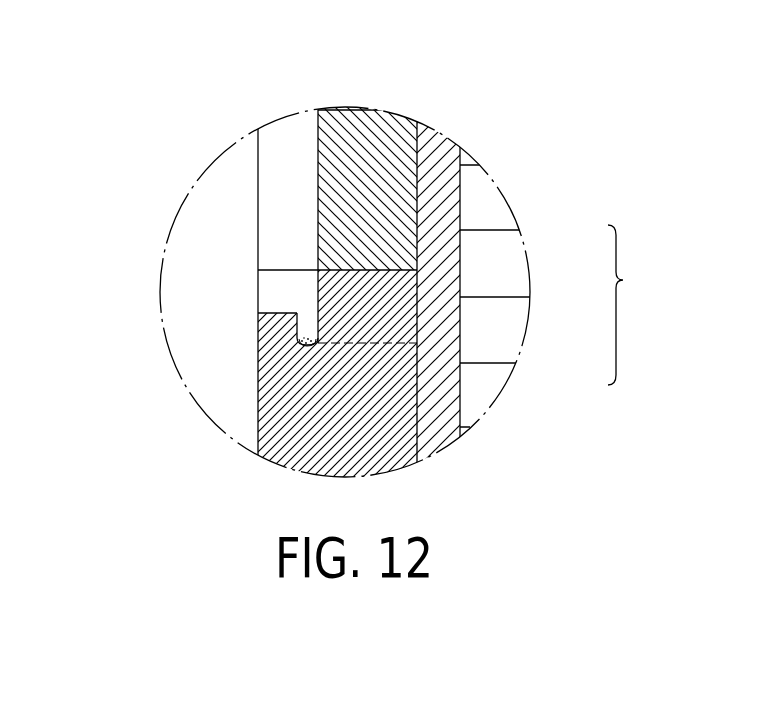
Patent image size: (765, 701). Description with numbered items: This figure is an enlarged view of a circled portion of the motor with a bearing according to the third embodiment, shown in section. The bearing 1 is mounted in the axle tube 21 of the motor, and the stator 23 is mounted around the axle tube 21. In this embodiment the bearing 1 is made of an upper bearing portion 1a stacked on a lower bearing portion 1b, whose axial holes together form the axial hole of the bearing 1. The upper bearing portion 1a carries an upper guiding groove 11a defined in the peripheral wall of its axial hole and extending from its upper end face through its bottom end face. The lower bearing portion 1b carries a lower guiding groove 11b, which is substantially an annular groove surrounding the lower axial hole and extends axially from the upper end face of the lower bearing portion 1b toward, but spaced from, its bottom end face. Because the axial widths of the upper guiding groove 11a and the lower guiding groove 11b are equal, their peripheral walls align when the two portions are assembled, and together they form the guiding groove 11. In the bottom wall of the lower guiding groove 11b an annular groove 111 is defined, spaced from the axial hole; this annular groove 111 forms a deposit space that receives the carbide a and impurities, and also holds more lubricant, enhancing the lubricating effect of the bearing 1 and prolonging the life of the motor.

The bearing 1 is at (646, 297).
The upper bearing portion 1a is at (398, 218).
The lower bearing portion 1b is at (398, 368).
The guiding groove 11 is at (250, 32).
The upper guiding groove 11a is at (297, 147).
The lower guiding groove 11b is at (285, 287).
The annular groove 111 is at (308, 315).
The carbide a is at (297, 337).
The axle tube 21 is at (440, 432).
The stator 23 is at (473, 198).